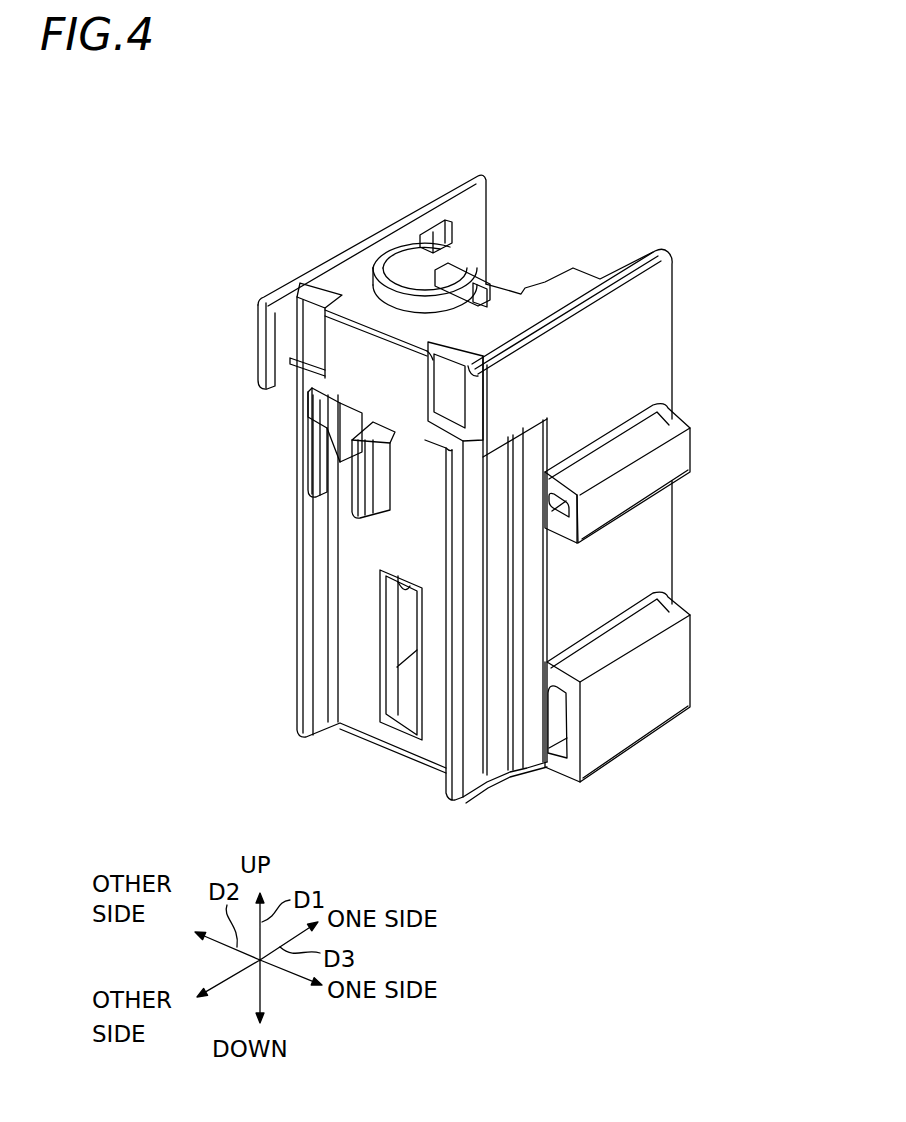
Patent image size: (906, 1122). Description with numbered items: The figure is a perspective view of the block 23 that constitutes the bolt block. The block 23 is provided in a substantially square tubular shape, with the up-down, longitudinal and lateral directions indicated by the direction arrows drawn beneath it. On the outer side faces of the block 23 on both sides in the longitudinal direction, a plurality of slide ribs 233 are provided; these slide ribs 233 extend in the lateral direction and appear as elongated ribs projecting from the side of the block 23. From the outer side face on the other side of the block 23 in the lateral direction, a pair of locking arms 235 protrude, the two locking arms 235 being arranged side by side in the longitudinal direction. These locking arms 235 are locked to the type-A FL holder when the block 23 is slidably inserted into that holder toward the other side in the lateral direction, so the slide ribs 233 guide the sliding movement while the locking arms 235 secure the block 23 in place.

The block 23 is at (682, 341).
The slide ribs 233 is at (623, 492).
The locking arms 235 is at (317, 472).